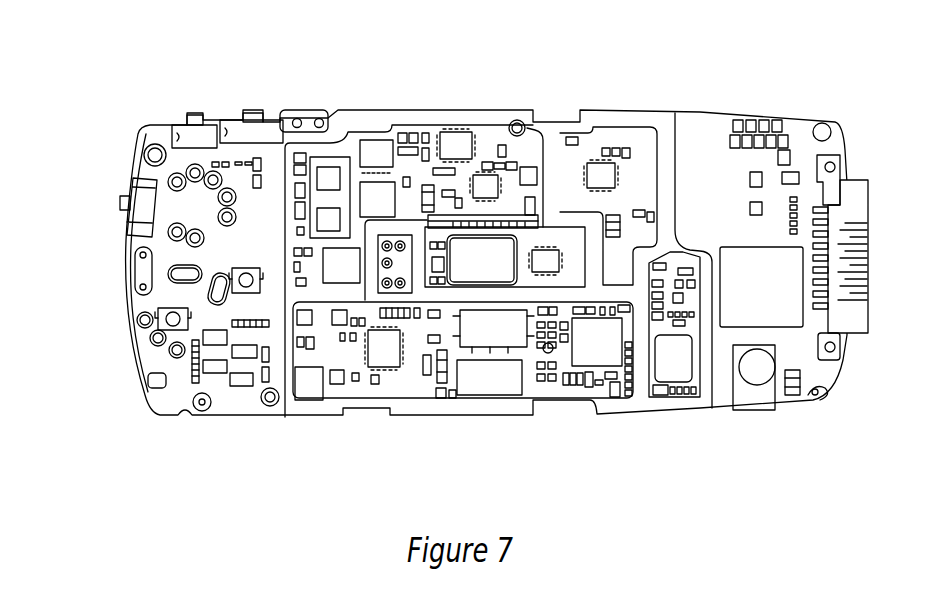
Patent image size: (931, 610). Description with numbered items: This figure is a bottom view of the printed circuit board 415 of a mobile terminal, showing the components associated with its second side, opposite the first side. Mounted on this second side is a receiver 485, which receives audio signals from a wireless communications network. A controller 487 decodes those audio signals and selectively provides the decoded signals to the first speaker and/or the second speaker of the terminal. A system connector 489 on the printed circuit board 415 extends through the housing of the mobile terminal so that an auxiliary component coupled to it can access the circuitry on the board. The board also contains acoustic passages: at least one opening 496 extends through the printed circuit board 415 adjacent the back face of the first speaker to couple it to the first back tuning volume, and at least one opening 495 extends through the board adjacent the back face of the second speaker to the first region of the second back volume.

The printed circuit board 415 is at (453, 245).
The receiver 485 is at (470, 217).
The controller 487 is at (753, 313).
The system connector 489 is at (838, 168).
The opening 495 is at (208, 290).
The opening 496 is at (170, 230).